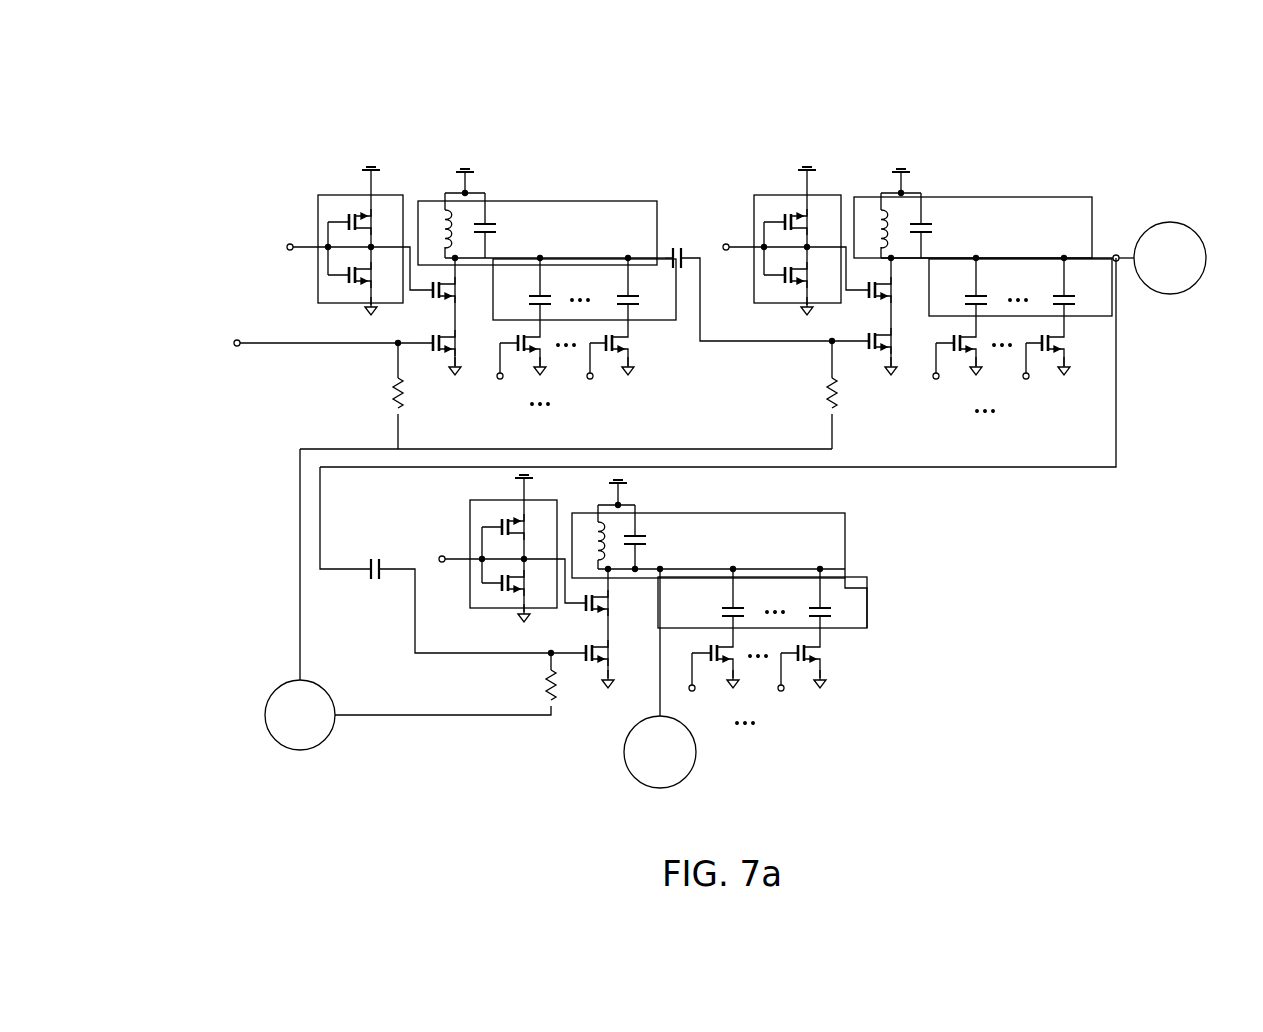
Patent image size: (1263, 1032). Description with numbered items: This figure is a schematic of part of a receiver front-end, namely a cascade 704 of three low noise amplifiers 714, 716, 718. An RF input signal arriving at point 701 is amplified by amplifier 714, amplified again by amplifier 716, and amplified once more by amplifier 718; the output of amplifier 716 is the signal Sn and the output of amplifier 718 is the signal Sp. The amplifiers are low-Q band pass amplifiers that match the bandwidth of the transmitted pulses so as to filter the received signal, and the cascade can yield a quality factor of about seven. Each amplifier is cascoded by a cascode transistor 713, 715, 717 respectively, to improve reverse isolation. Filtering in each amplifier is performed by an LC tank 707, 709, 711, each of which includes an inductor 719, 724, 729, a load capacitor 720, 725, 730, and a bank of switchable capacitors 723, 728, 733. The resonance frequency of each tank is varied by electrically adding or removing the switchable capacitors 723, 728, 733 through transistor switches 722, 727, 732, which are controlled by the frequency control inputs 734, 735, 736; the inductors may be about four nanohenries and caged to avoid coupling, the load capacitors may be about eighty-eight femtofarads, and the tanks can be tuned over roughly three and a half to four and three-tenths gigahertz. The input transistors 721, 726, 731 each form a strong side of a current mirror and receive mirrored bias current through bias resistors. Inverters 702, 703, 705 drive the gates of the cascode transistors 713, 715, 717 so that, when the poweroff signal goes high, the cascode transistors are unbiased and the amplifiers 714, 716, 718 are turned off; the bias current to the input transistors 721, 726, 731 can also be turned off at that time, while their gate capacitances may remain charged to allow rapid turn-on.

The RF input point 701 is at (207, 347).
The inverter of transistors M11 and M12 702 is at (318, 218).
The inverter of transistors M11 and M12 703 is at (757, 200).
The cascade of low noise amplifiers 704 is at (244, 113).
The inverter of transistors M11 and M12 705 is at (470, 518).
The LC tank 707 is at (524, 205).
The LC tank 709 is at (967, 200).
The LC tank 711 is at (731, 554).
The cascode transistor ML1 713 is at (425, 293).
The low noise amplifier 714 is at (584, 138).
The cascode transistor ML3 715 is at (862, 294).
The low noise amplifier 716 is at (1031, 143).
The cascode transistor ML5 717 is at (580, 607).
The low noise amplifier 718 is at (953, 603).
The inductor L 719 is at (444, 210).
The capacitor CL1 720 is at (489, 218).
The transistor ML2 721 is at (437, 360).
The transistor switches MF1-MF4 722 is at (604, 349).
The capacitors C1-C4 723 is at (626, 294).
The inductor L 724 is at (880, 210).
The capacitor CL2 725 is at (928, 218).
The transistor ML4 726 is at (865, 360).
The transistor switches MF1-MF4 727 is at (1062, 351).
The capacitors C1-C4 728 is at (1062, 294).
The inductor L 729 is at (598, 524).
The capacitor CL3 730 is at (641, 533).
The transistor ML6 731 is at (585, 675).
The transistor switches MF1-MF4 732 is at (803, 664).
The capacitors C1-C4 733 is at (816, 606).
The inputs F[0] through F[3] 734 is at (561, 409).
The inputs F[0] through F[3] 735 is at (1002, 413).
The inputs F[0] through F[3] 736 is at (771, 731).